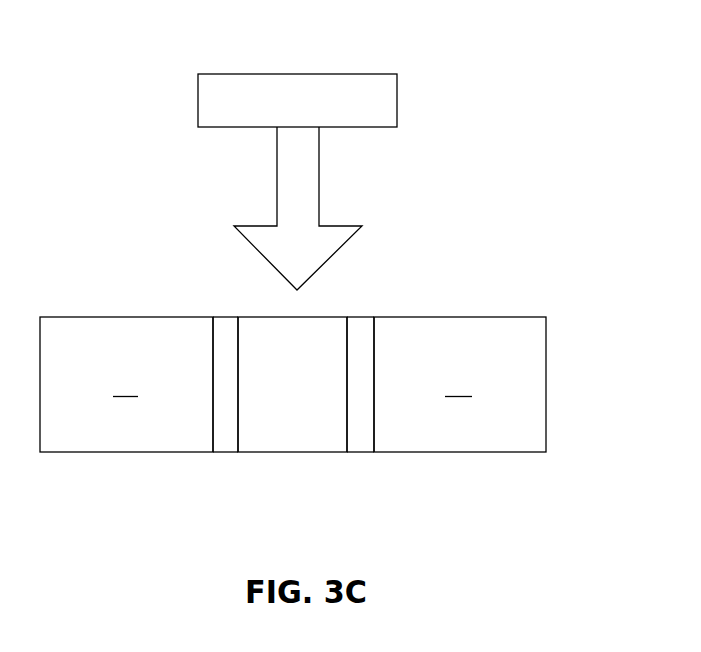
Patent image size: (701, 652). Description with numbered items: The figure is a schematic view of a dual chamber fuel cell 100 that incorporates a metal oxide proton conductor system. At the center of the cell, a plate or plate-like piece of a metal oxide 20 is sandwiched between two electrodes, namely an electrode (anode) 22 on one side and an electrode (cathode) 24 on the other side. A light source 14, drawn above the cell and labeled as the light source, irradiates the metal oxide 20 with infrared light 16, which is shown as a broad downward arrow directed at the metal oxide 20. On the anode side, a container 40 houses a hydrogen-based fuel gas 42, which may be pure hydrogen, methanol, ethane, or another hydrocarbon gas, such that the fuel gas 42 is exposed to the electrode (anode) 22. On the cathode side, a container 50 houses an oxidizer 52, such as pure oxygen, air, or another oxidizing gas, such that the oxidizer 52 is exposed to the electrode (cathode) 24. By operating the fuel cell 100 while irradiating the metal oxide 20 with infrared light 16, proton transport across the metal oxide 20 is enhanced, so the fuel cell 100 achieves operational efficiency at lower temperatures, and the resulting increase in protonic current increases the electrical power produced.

The dual chamber fuel cell 100 is at (506, 159).
The light source 14 is at (223, 127).
The infrared light 16 is at (319, 198).
The container 40 is at (148, 317).
The hydrogen-based fuel gas 42 is at (125, 386).
The electrode (anode) 22 is at (147, 452).
The metal oxide 20 is at (312, 452).
The electrode (cathode) 24 is at (474, 452).
The container 50 is at (491, 317).
The oxidizer 52 is at (458, 386).